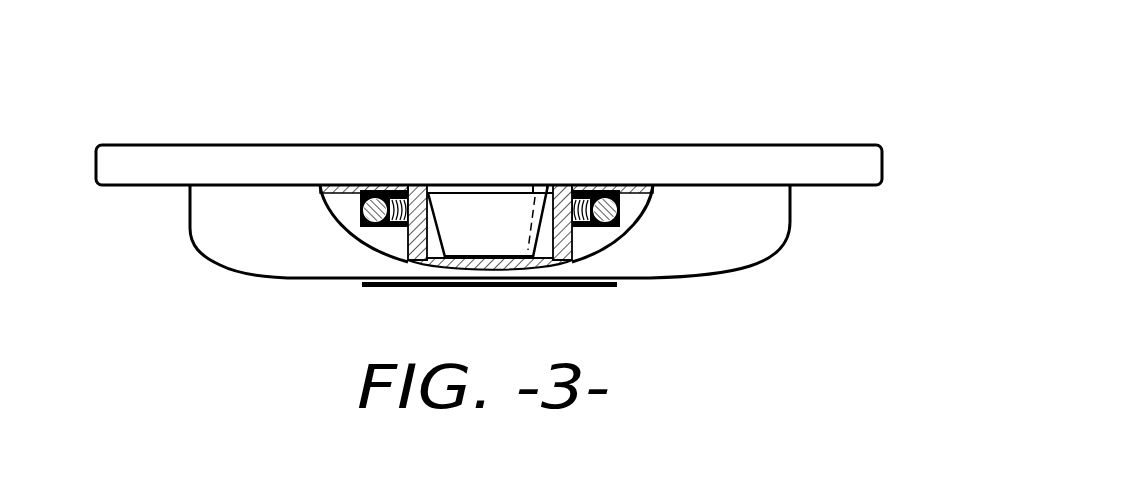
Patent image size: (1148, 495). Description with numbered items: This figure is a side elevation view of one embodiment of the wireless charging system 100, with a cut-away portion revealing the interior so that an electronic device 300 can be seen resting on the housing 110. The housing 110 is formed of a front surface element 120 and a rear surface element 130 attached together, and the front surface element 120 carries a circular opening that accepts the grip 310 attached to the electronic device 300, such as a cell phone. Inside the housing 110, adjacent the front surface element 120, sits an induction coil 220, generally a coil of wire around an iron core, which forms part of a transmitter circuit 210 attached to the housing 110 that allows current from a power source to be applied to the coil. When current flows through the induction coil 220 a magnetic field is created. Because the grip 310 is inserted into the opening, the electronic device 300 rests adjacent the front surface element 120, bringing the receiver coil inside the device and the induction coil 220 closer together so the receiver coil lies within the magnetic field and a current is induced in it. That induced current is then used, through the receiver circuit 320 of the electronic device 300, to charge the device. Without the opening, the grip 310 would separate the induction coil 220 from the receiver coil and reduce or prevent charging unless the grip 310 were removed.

The wireless charging system 100 is at (818, 92).
The housing 110 is at (189, 192).
The front surface element 120 is at (752, 184).
The rear surface element 130 is at (735, 272).
The transmitter circuit 210 is at (363, 208).
The induction coil 220 is at (617, 207).
The electronic device 300 is at (493, 145).
The grip 310 is at (463, 210).
The receiver circuit 320 is at (611, 140).